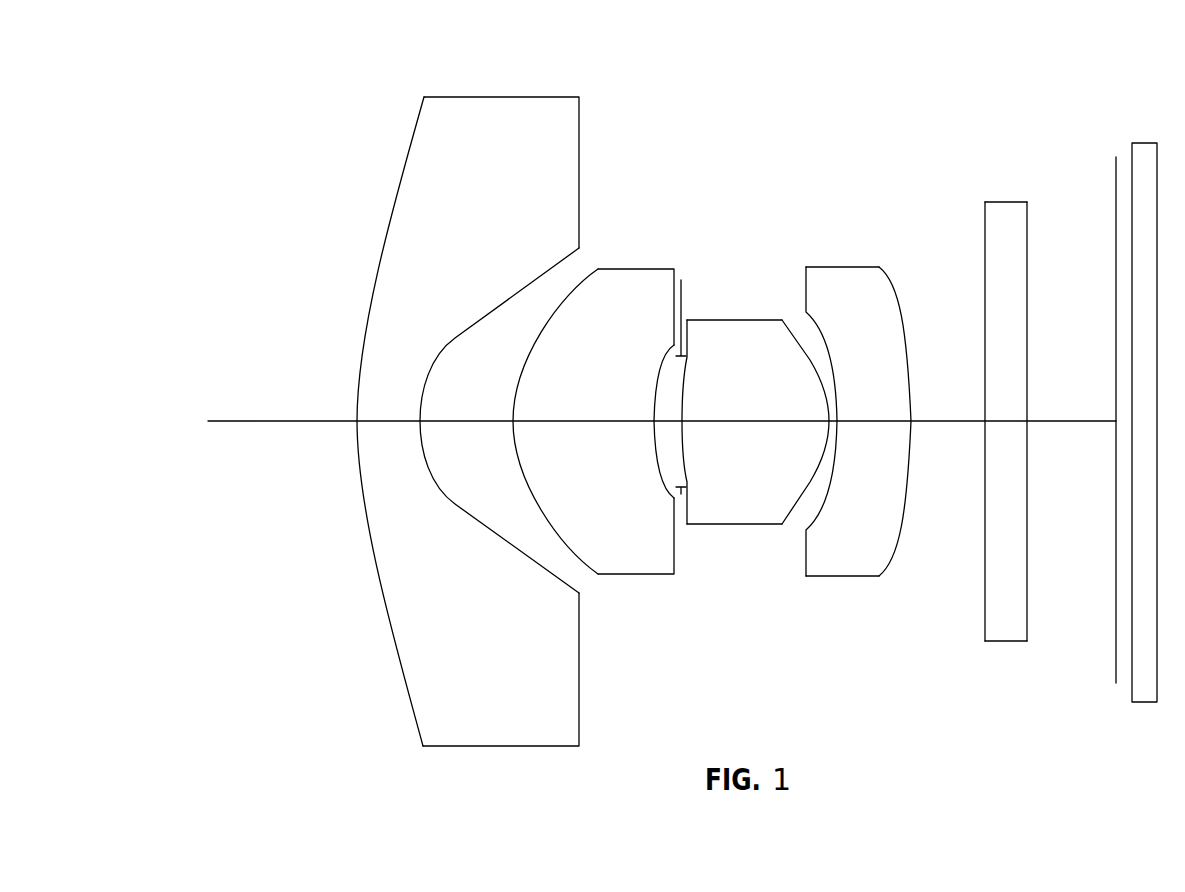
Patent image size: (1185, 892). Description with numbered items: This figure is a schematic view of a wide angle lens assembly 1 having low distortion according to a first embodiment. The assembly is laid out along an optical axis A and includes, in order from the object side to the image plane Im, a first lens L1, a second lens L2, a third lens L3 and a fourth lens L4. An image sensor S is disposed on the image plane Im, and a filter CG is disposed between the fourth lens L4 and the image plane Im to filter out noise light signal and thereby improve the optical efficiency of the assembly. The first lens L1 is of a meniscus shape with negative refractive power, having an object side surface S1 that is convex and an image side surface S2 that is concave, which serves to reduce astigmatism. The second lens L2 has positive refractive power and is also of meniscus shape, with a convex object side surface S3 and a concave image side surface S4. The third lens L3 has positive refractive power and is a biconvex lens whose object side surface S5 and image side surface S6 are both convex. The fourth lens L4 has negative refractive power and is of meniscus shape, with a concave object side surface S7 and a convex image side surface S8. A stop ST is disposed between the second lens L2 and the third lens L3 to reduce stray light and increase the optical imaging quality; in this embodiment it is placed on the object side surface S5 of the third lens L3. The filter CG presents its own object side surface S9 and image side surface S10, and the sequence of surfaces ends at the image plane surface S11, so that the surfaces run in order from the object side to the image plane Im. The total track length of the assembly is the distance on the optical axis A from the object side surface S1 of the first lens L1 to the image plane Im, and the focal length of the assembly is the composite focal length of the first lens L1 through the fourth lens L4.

The wide angle lens assembly 1 is at (345, 147).
The optical axis A is at (646, 415).
The first lens L1 is at (433, 389).
The second lens L2 is at (603, 358).
The stop ST is at (681, 280).
The third lens L3 is at (755, 360).
The fourth lens L4 is at (871, 360).
The filter CG is at (1014, 363).
The image plane Im is at (1097, 376).
The image sensor S is at (1143, 143).
The object side surface of the first lens S1 is at (360, 483).
The image side surface of the first lens S2 is at (513, 548).
The object side surface of the second lens S3 is at (543, 525).
The image side surface of the second lens S4 is at (653, 452).
The object side surface of the third lens S5 is at (684, 455).
The image side surface of the third lens S6 is at (813, 483).
The object side surface of the fourth lens S7 is at (833, 480).
The image side surface of the fourth lens S8 is at (907, 490).
The object side surface of the filter S9 is at (985, 500).
The image side surface of the filter S10 is at (1027, 500).
The image plane surface S11 is at (1116, 577).